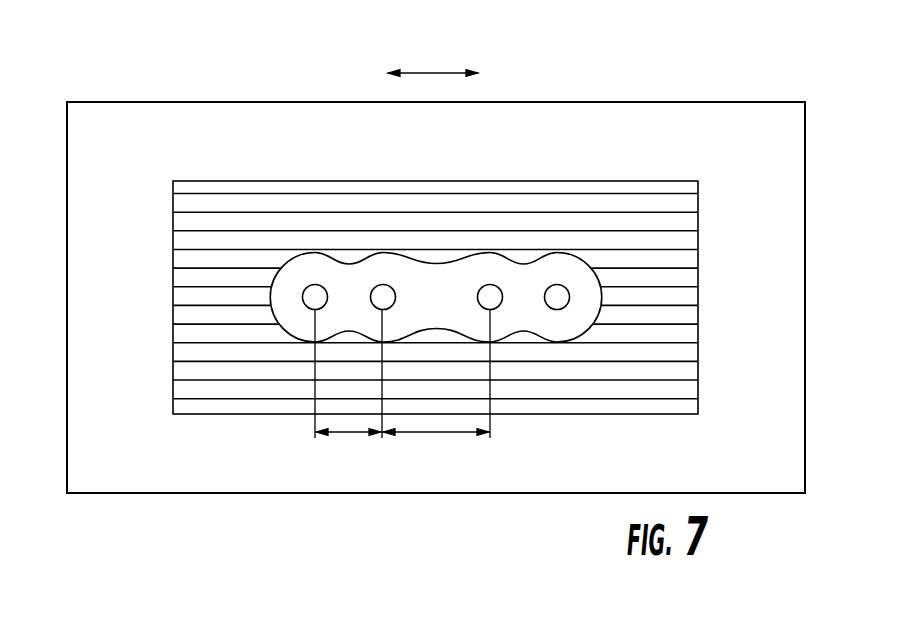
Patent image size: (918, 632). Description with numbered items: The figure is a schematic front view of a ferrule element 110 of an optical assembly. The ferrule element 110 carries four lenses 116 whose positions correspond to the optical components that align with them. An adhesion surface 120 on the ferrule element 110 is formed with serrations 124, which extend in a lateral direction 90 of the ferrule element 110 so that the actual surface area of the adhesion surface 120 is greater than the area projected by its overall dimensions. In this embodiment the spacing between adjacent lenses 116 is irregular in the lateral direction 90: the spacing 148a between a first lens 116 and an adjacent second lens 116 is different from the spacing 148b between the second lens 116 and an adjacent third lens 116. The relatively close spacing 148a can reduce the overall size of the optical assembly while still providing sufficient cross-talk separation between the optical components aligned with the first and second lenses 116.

The lateral direction 90 is at (433, 73).
The ferrule element 110 is at (808, 419).
The lenses 116 is at (557, 284).
The adhesion surface 120 is at (477, 297).
The serrations 124 is at (682, 362).
The spacing between first and second lenses 148a is at (348, 433).
The spacing between second and third lenses 148b is at (456, 433).